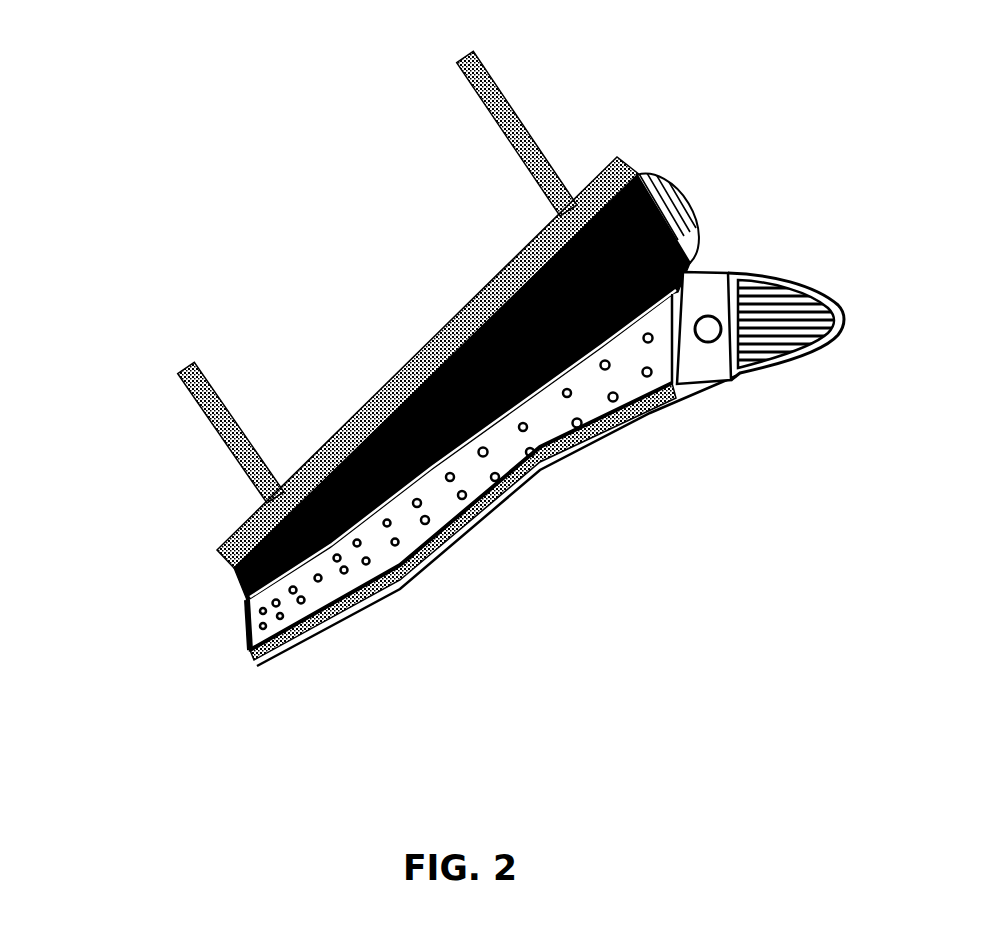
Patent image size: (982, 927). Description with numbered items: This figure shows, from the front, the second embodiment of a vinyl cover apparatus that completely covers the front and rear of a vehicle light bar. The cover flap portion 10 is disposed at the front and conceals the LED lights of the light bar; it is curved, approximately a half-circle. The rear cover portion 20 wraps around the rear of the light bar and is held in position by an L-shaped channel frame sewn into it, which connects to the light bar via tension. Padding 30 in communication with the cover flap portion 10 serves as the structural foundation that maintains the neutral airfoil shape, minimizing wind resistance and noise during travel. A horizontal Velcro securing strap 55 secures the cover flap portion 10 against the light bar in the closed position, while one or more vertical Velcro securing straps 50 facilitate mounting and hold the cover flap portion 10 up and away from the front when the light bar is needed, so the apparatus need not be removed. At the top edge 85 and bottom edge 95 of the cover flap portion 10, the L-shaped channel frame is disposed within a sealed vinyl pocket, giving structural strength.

The cover flap portion 10 is at (720, 159).
The rear cover portion 20 is at (825, 423).
The padding 30 is at (380, 430).
The vertical Velcro securing strap 50 is at (652, 404).
The horizontal Velcro securing strap 55 is at (493, 462).
The top edge 85 is at (782, 281).
The bottom edge 95 is at (447, 288).